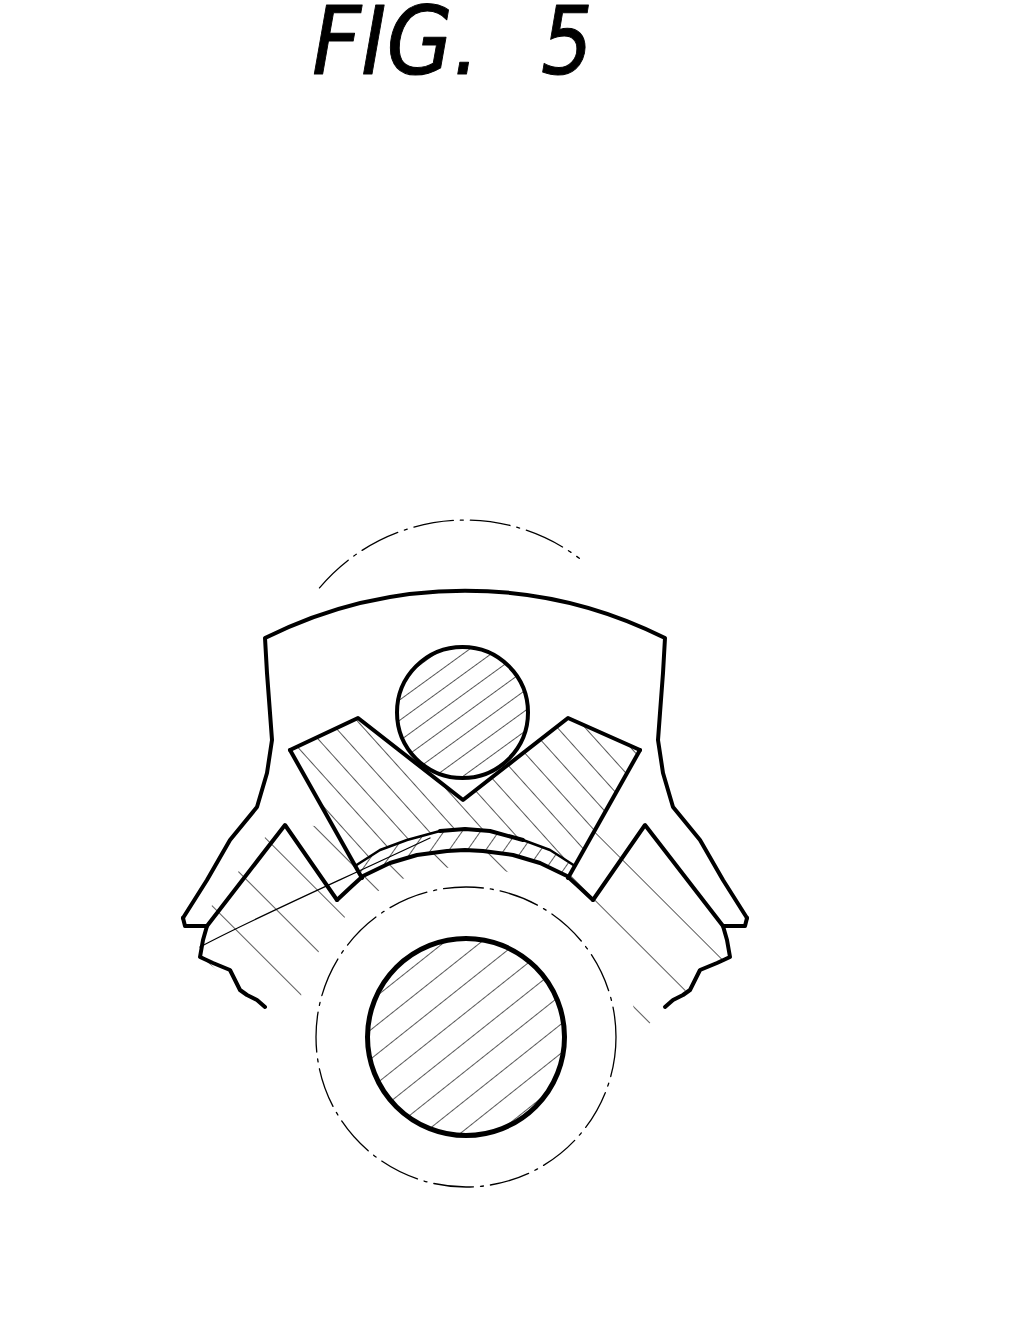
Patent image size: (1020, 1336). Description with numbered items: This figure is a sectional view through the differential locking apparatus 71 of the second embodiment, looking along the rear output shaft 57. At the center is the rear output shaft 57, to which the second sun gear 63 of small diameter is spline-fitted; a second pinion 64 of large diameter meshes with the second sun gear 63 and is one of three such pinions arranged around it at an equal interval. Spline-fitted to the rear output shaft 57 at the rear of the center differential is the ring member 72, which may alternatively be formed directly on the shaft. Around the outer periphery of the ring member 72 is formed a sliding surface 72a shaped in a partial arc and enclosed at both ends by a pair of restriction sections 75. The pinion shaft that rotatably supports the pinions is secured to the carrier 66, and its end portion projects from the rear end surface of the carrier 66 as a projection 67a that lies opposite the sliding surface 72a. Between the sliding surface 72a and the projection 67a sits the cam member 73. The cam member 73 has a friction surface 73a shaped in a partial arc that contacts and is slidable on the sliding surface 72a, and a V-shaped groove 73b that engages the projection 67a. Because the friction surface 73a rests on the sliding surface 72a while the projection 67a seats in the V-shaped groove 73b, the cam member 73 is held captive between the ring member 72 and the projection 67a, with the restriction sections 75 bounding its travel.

The rear output shaft 57 is at (493, 1104).
The second sun gear 63 is at (613, 1057).
The second pinion 64 is at (530, 537).
The carrier 66 is at (643, 658).
The projection 67a is at (437, 663).
The differential locking apparatus 71 is at (503, 412).
The ring member 72 is at (708, 943).
The sliding surface 72a is at (200, 947).
The cam member 73 is at (502, 658).
The friction surface 73a is at (563, 717).
The V-shaped groove 73b is at (377, 730).
The restriction section 75 is at (320, 860).